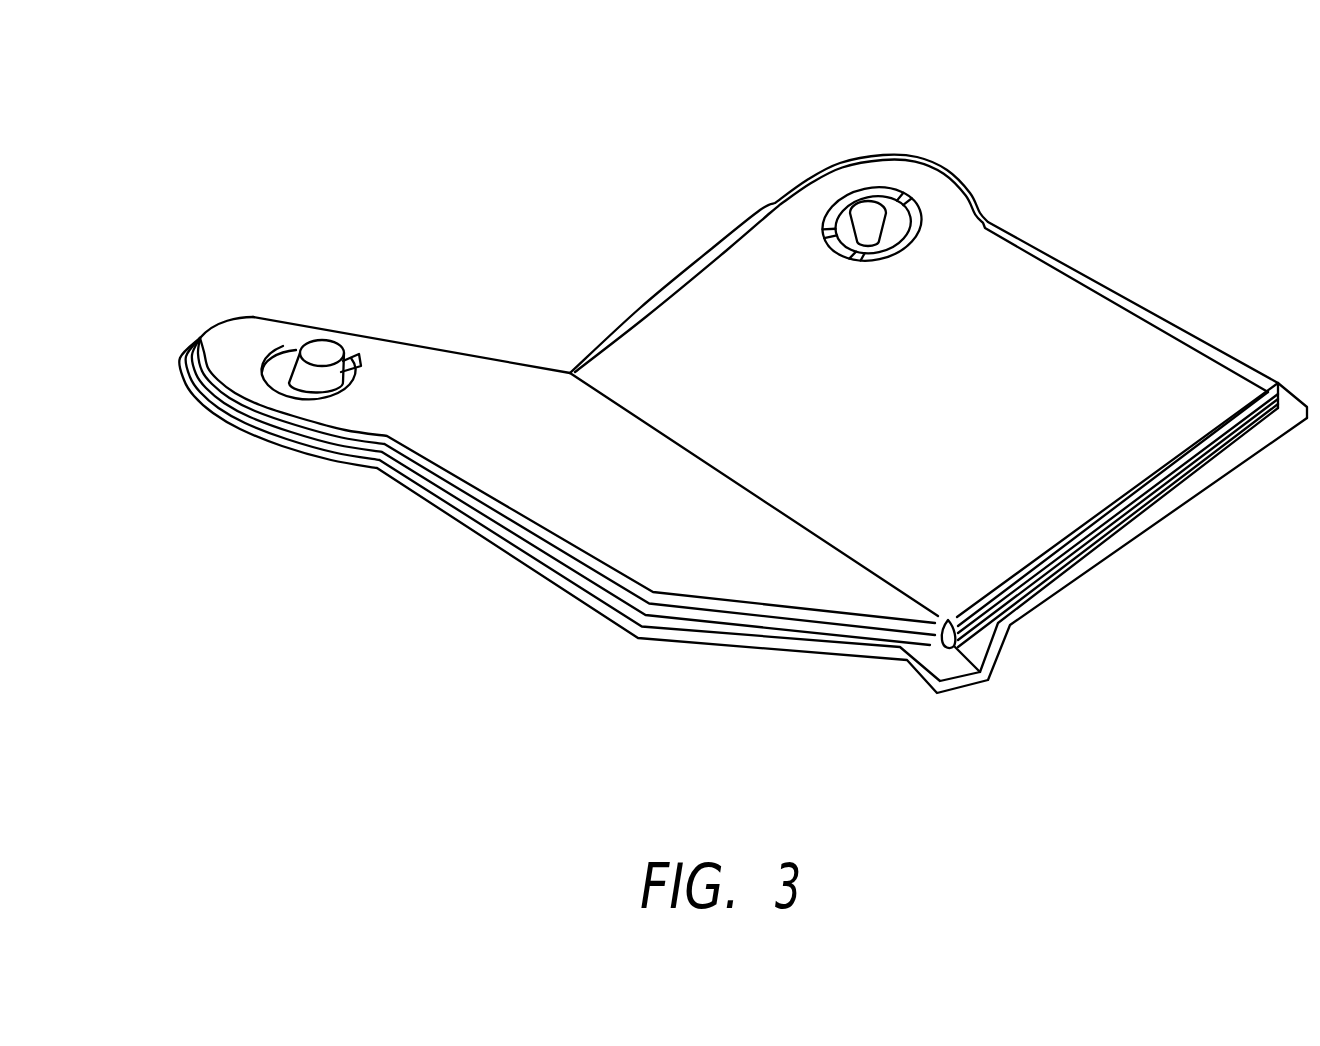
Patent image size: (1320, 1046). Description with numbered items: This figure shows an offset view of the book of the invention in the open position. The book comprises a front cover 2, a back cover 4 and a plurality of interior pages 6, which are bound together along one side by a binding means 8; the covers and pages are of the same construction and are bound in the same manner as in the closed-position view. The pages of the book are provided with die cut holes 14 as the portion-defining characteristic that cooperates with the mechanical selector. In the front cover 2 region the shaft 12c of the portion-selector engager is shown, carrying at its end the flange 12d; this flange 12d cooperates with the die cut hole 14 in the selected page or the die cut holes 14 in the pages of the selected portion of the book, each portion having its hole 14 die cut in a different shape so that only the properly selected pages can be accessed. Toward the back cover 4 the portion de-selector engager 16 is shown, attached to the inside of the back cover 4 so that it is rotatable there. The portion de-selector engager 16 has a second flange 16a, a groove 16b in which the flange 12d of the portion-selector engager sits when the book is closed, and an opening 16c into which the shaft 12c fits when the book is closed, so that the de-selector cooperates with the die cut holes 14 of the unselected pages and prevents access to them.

The front cover 2 is at (728, 638).
The back cover 4 is at (938, 401).
The page 6 is at (1205, 447).
The binding means 8 is at (947, 663).
The shaft 12c is at (279, 358).
The flange 12d is at (355, 358).
The die cut hole 14 is at (980, 210).
The portion de-selector engager 16 is at (879, 219).
The second flange 16a is at (833, 225).
The groove 16b is at (868, 240).
The opening 16c is at (868, 213).